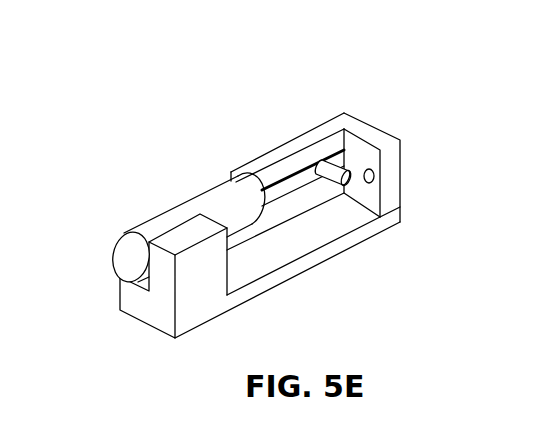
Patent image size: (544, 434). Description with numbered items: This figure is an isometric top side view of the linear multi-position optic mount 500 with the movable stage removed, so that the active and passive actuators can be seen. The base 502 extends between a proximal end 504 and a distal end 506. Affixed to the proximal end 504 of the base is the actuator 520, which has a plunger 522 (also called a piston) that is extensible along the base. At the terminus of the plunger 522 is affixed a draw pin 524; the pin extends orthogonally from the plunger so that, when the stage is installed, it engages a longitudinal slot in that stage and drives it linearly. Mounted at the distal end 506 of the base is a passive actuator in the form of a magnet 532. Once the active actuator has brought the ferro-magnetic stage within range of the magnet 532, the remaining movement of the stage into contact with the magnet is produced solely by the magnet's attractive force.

The assembly 500 is at (298, 229).
The base 502 is at (325, 252).
The proximal end 504 is at (203, 305).
The distal end 506 is at (390, 214).
The actuator 520 is at (207, 202).
The plunger 522 is at (297, 168).
The pin 524 is at (350, 168).
The magnet 532 is at (367, 179).